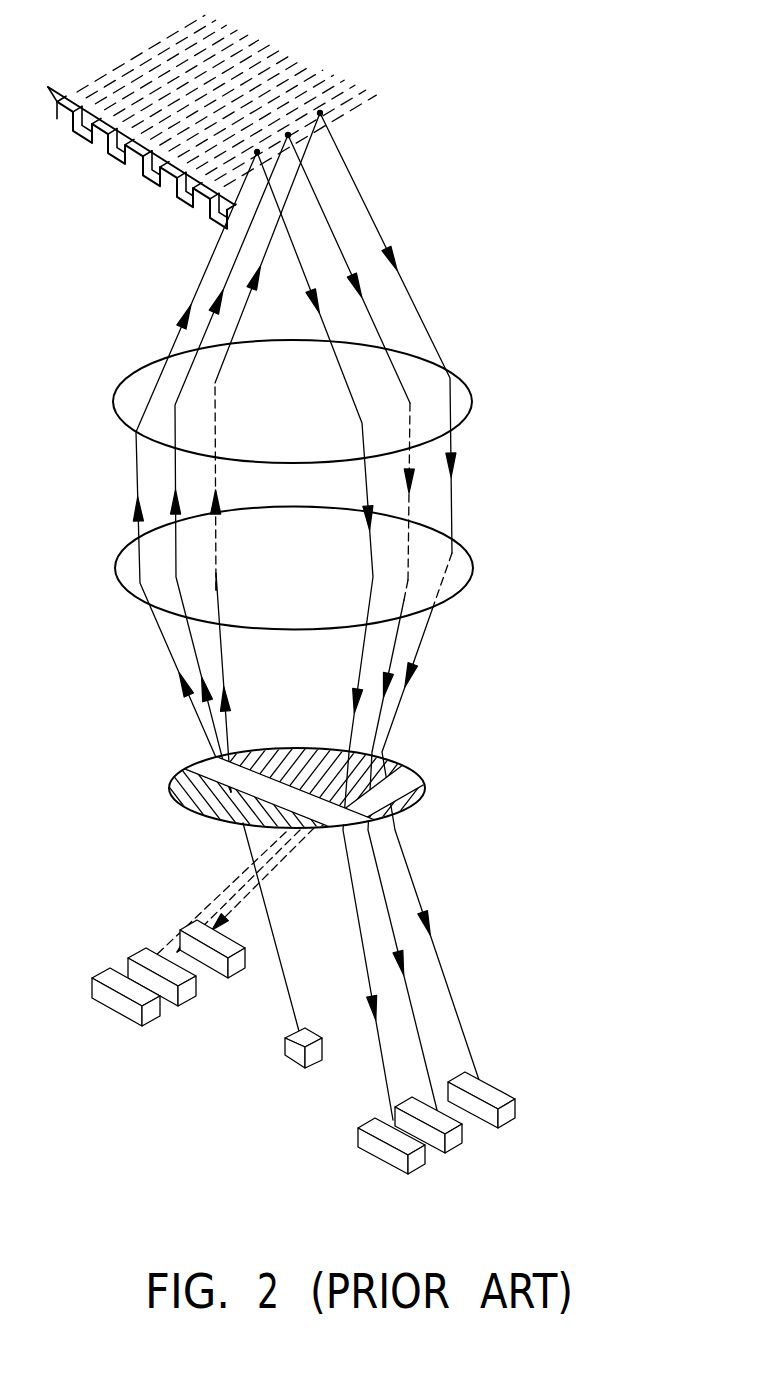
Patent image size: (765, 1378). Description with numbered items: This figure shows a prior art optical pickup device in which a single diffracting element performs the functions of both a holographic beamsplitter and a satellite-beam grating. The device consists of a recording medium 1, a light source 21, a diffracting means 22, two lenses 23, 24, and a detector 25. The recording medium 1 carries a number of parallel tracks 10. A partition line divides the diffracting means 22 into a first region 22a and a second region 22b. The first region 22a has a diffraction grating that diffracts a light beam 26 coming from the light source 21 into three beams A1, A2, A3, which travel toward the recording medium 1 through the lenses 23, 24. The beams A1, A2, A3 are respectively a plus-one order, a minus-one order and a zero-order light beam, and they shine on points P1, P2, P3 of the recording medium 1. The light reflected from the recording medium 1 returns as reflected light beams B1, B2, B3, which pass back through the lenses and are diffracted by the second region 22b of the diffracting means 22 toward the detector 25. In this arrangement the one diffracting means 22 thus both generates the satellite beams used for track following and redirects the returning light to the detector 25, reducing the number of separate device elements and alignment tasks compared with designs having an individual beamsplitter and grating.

The recording medium 1 is at (107, 153).
The parallel tracks 10 is at (163, 182).
The point P1 is at (257, 152).
The point P2 is at (320, 113).
The point P3 is at (288, 135).
The lens 24 is at (113, 403).
The lens 23 is at (115, 567).
The +1 order light beam A1 is at (195, 708).
The −1 order light beam A2 is at (223, 662).
The zero-order light beam A3 is at (192, 638).
The reflected light beam B1 is at (363, 657).
The reflected light beam B2 is at (395, 735).
The reflected light beam B3 is at (397, 643).
The diffracting means 22 is at (303, 804).
The first region 22a is at (187, 793).
The second region 22b is at (425, 782).
The detector 25 is at (180, 909).
The light beam 26 is at (278, 957).
The light source 21 is at (290, 1053).